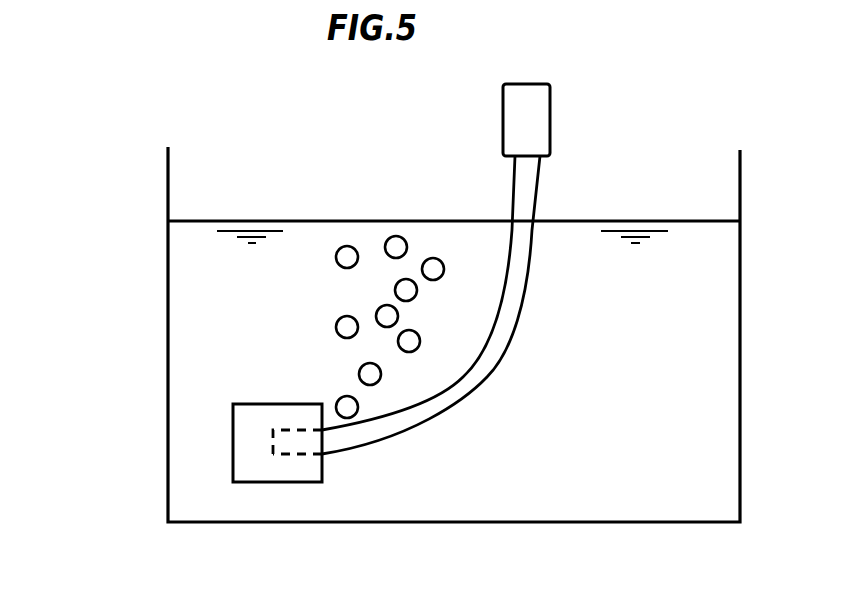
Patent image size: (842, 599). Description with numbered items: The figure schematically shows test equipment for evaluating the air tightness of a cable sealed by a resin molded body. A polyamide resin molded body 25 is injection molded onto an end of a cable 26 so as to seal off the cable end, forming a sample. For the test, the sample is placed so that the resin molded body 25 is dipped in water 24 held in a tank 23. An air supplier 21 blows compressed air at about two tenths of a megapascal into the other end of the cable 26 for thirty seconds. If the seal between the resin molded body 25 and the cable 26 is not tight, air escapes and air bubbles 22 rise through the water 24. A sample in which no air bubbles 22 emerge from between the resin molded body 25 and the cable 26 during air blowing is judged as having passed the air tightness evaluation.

The air supplier 21 is at (550, 118).
The air bubbles 22 is at (345, 246).
The tank 23 is at (163, 287).
The water 24 is at (197, 360).
The resin molded body 25 is at (275, 482).
The cable 26 is at (439, 429).